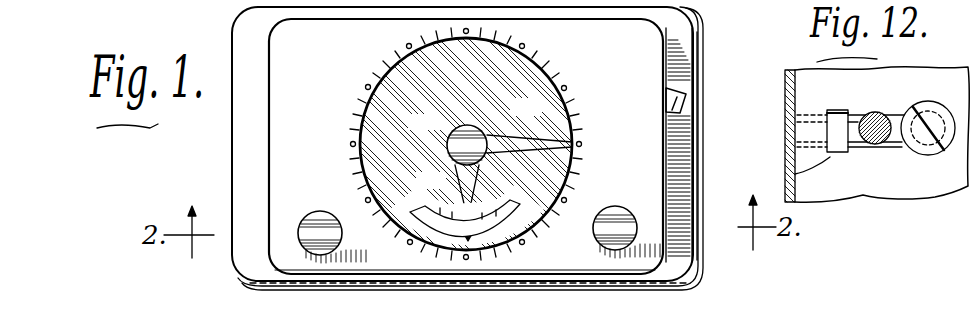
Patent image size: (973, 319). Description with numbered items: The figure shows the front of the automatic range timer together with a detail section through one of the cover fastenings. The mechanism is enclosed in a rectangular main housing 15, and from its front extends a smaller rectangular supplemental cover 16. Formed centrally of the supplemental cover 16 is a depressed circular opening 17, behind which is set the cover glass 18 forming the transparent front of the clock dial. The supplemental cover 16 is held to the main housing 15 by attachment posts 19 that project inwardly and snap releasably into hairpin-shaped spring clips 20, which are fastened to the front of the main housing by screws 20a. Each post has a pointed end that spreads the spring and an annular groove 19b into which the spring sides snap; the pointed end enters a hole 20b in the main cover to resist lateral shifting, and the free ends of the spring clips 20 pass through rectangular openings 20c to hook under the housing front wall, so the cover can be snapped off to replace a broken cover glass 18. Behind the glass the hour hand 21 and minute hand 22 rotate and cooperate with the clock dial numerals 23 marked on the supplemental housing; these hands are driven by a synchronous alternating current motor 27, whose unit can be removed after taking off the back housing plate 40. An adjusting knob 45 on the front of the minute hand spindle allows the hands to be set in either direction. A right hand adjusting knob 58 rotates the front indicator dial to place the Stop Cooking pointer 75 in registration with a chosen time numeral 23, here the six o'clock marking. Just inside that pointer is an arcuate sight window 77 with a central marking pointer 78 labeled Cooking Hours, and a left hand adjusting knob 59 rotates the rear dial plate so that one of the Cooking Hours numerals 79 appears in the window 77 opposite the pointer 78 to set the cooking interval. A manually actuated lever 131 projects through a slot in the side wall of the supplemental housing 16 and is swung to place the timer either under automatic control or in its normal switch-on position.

In FIG. 1, the main housing 15 is at (238, 160).
In FIG. 1, the supplemental cover 16 is at (284, 127).
In FIG. 12, the supplemental cover 16 is at (784, 80).
In FIG. 1, the depressed circular opening 17 is at (366, 128).
In FIG. 1, the cover glass 18 is at (545, 123).
In FIG. 12, the attachment post 19 is at (869, 116).
In FIG. 12, the annular groove 19b is at (897, 145).
In FIG. 12, the spring clip 20 is at (888, 112).
In FIG. 12, the screw 20a is at (957, 94).
In FIG. 12, the hole 20b is at (866, 147).
In FIG. 12, the rectangular opening 20c is at (795, 175).
In FIG. 1, the hour hand 21 is at (462, 191).
In FIG. 1, the minute hand 22 is at (519, 138).
In FIG. 1, the clock dial numerals 23 is at (577, 75).
In FIG. 1, the synchronous alternating current motor 27 is at (62, 0).
In FIG. 1, the back housing plate 40 is at (158, 0).
In FIG. 1, the adjusting knob 45 is at (448, 129).
In FIG. 1, the right hand adjusting knob 58 is at (617, 208).
In FIG. 1, the left hand adjusting knob 59 is at (314, 212).
In FIG. 1, the Stop Cooking pointer 75 is at (470, 256).
In FIG. 1, the sight window 77 is at (406, 242).
In FIG. 1, the marking pointer 78 is at (469, 211).
In FIG. 1, the Cooking Hours numerals 79 is at (425, 216).
In FIG. 1, the manually actuated lever 131 is at (686, 93).